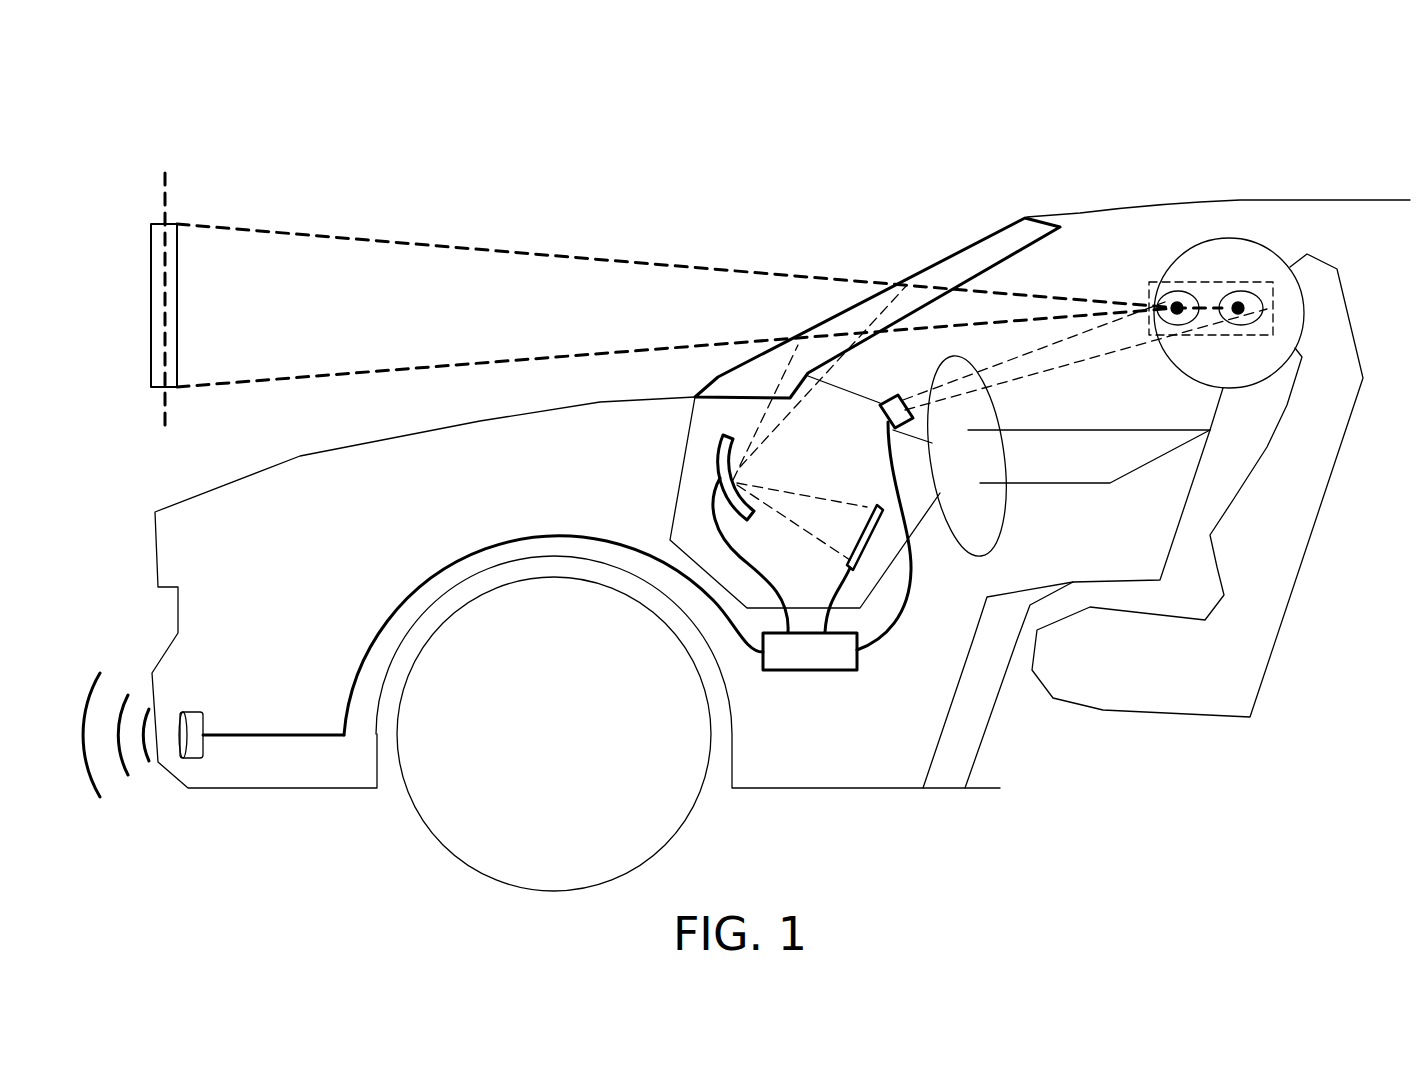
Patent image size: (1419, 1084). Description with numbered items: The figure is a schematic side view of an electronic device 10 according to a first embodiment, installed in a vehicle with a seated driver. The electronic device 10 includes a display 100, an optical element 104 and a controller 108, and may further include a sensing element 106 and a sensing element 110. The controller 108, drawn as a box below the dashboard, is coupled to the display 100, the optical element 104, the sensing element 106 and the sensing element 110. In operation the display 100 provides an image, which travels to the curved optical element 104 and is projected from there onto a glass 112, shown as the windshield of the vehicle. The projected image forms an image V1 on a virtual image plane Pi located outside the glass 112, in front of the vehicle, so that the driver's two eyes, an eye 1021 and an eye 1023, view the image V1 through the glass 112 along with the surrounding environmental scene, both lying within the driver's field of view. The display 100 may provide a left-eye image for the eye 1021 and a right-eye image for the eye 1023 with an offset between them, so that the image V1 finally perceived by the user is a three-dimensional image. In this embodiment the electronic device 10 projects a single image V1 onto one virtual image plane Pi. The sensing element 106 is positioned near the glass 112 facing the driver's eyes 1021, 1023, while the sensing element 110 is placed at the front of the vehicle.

The electronic device 10 is at (1175, 80).
The display 100 is at (860, 537).
The optical element 104 is at (722, 460).
The sensing element 106 is at (900, 398).
The controller 108 is at (810, 655).
The sensing element 110 is at (207, 712).
The glass 112 is at (970, 257).
The eye 1021 is at (1254, 290).
The eye 1023 is at (1186, 290).
The virtual image plane Pi is at (165, 197).
The image V1 is at (158, 308).